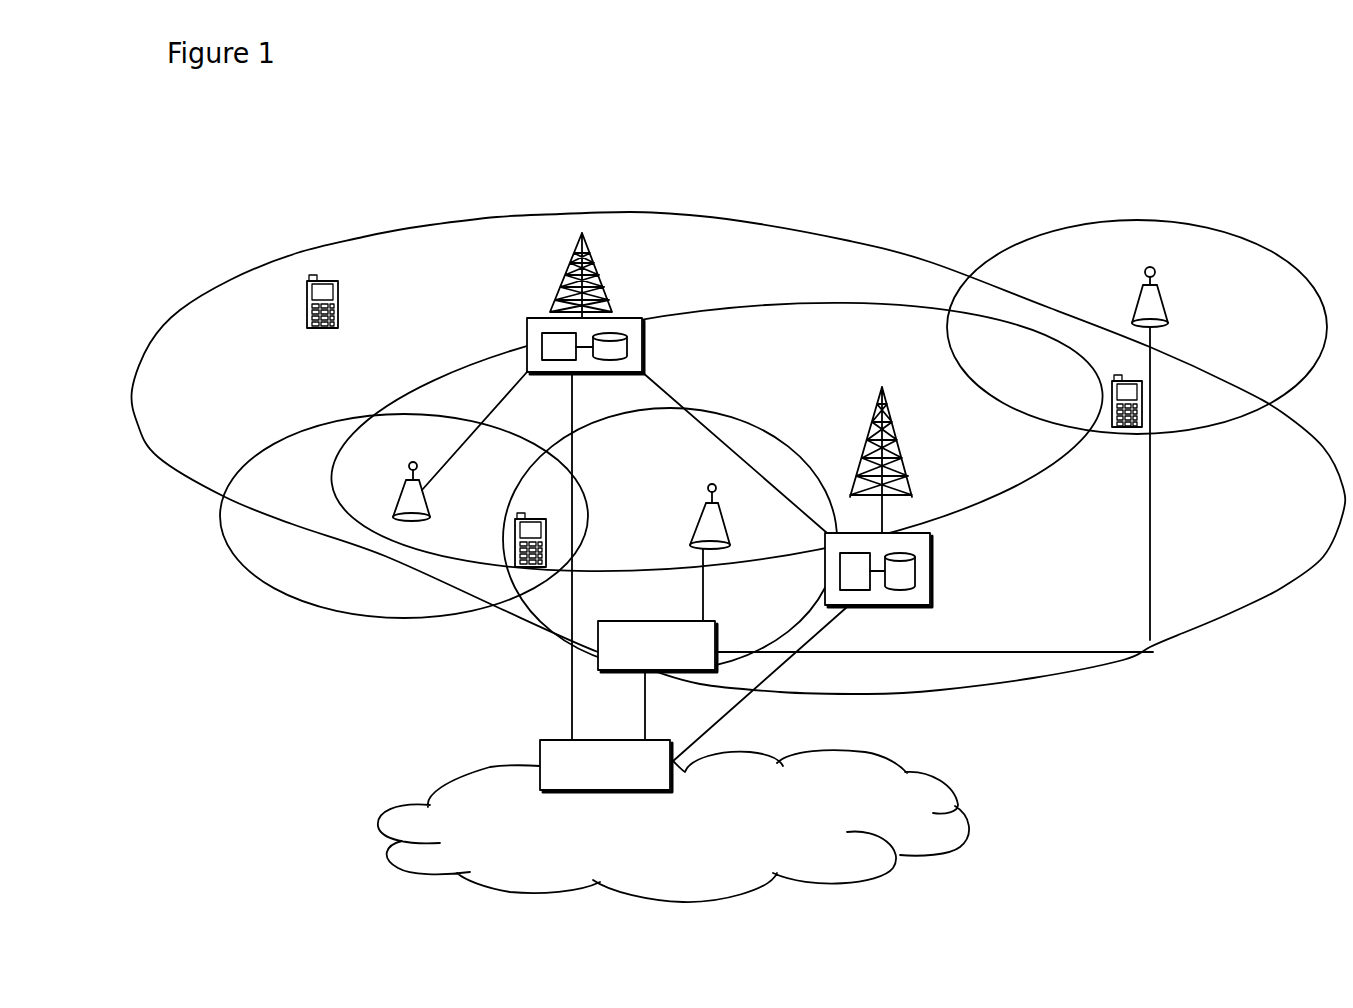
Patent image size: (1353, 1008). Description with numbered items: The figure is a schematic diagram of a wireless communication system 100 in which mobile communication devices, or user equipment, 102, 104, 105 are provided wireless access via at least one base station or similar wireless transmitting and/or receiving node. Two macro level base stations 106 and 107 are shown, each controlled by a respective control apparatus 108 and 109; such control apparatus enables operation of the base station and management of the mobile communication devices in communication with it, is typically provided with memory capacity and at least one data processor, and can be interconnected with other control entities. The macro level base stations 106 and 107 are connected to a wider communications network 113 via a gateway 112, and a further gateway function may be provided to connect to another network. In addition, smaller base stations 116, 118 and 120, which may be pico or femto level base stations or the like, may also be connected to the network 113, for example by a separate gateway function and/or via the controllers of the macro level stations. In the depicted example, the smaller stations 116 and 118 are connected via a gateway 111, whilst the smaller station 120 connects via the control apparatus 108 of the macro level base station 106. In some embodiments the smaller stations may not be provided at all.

The wireless communication system 100 is at (221, 260).
The mobile communication device 102 is at (305, 318).
The mobile communication device 104 is at (511, 557).
The mobile communication device 105 is at (1127, 428).
The macro level base station 106 is at (563, 287).
The macro level base station 107 is at (904, 462).
The control apparatus 108 is at (525, 334).
The control apparatus 109 is at (917, 597).
The gateway 111 is at (607, 652).
The gateway 112 is at (542, 738).
The wider communications network 113 is at (463, 800).
The smaller base station 116 is at (1135, 297).
The smaller base station 118 is at (712, 535).
The smaller base station 120 is at (397, 497).